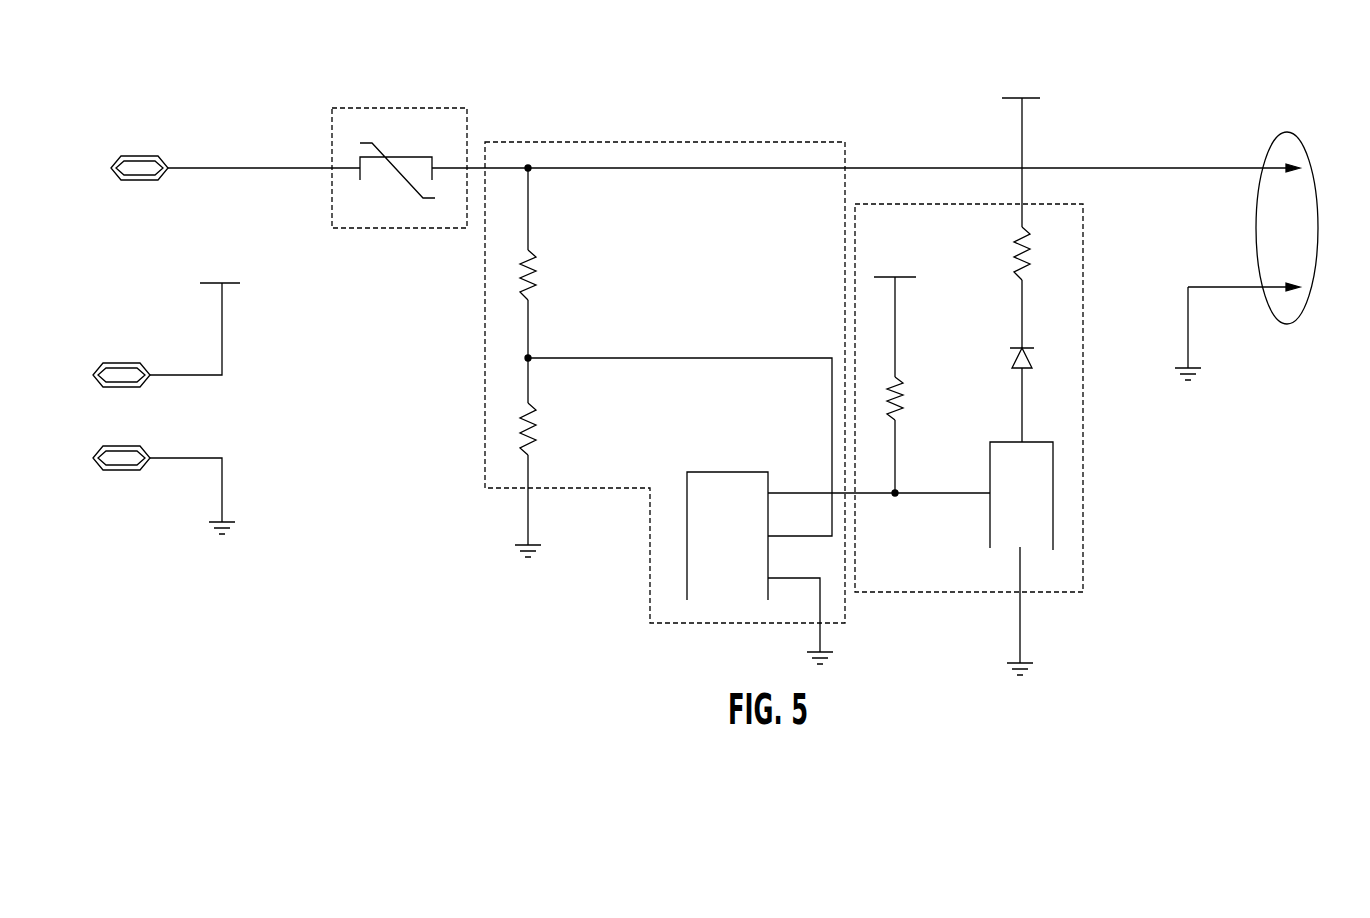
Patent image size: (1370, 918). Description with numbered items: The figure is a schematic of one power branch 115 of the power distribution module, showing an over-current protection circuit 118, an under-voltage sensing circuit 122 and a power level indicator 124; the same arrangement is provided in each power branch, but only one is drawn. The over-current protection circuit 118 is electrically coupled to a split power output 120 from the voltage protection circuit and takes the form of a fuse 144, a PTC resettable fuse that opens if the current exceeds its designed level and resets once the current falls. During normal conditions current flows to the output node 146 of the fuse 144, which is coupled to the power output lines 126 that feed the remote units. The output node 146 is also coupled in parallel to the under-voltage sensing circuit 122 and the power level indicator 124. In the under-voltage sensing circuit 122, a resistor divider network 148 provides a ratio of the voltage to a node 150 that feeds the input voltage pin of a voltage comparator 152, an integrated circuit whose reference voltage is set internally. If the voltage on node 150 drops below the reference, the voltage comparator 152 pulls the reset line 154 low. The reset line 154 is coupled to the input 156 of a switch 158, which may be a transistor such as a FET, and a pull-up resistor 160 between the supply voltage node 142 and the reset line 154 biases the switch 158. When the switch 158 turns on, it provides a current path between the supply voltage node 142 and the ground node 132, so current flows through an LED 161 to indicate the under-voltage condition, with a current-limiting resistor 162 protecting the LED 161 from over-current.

The power branch 115 is at (690, 77).
The over-current protection circuit 118 is at (418, 100).
The split power output 120 is at (140, 157).
The under-voltage sensing circuit 122 is at (720, 142).
The power level indicator 124 is at (1068, 204).
The power output lines 126 is at (1305, 145).
The GND node 132 is at (232, 522).
The VS2 node 142 is at (1038, 95).
The fuse 144 is at (404, 152).
The output node 146 is at (531, 170).
The resistor divider network 148 is at (508, 358).
The node 150 is at (668, 358).
The voltage comparator 152 is at (710, 472).
The reset line 154 is at (850, 495).
The input 156 is at (960, 493).
The switch 158 is at (1008, 442).
The pull-up resistor 160 is at (902, 393).
The LED 161 is at (1003, 343).
The current-limiting resistor 162 is at (1040, 252).